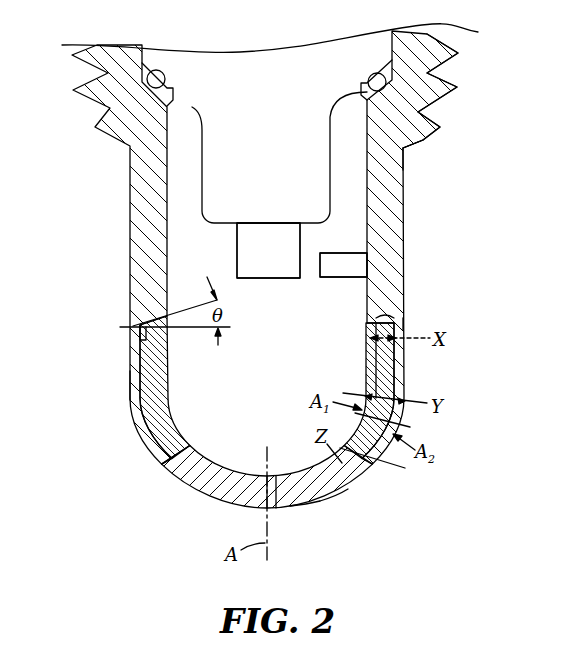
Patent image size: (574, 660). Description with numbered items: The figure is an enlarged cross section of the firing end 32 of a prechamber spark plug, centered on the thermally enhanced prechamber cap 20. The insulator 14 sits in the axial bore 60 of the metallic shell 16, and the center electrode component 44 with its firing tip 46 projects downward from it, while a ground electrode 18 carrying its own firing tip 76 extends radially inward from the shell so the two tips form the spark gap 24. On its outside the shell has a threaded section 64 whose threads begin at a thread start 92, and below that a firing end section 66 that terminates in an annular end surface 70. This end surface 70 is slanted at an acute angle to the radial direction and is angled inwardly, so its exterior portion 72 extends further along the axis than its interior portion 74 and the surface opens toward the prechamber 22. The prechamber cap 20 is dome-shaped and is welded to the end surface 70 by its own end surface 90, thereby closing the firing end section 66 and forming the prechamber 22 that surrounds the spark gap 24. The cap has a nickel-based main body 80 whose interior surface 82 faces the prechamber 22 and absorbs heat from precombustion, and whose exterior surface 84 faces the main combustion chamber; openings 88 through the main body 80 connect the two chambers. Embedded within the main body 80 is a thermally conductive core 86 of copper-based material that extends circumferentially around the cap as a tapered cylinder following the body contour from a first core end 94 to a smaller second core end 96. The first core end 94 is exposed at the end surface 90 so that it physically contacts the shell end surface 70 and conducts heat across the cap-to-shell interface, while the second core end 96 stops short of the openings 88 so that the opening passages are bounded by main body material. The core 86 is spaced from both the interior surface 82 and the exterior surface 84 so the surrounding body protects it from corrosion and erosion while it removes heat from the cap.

The insulator 14 is at (300, 143).
The metallic shell 16 is at (428, 92).
The ground electrode 18 is at (338, 287).
The thermally enhanced prechamber cap 20 is at (220, 510).
The prechamber 22 is at (280, 445).
The spark gap 24 is at (306, 276).
The firing end 32 is at (399, 467).
The center electrode component 44 is at (237, 243).
The firing tip 46 is at (268, 250).
The axial bore 60 is at (168, 127).
The threaded section 64 is at (127, 103).
The firing end section 66 is at (388, 212).
The end surface 70 is at (132, 330).
The exterior portion 72 is at (143, 324).
The interior portion 74 is at (170, 312).
The firing tip 76 is at (343, 265).
The main body 80 is at (305, 502).
The interior surface 82 is at (168, 375).
The exterior surface 84 is at (130, 392).
The thermally conductive core 86 is at (150, 443).
The openings 88 is at (337, 483).
The end surface 90 is at (405, 320).
The thread start 92 is at (425, 133).
The first core end 94 is at (385, 312).
The second core end 96 is at (362, 458).